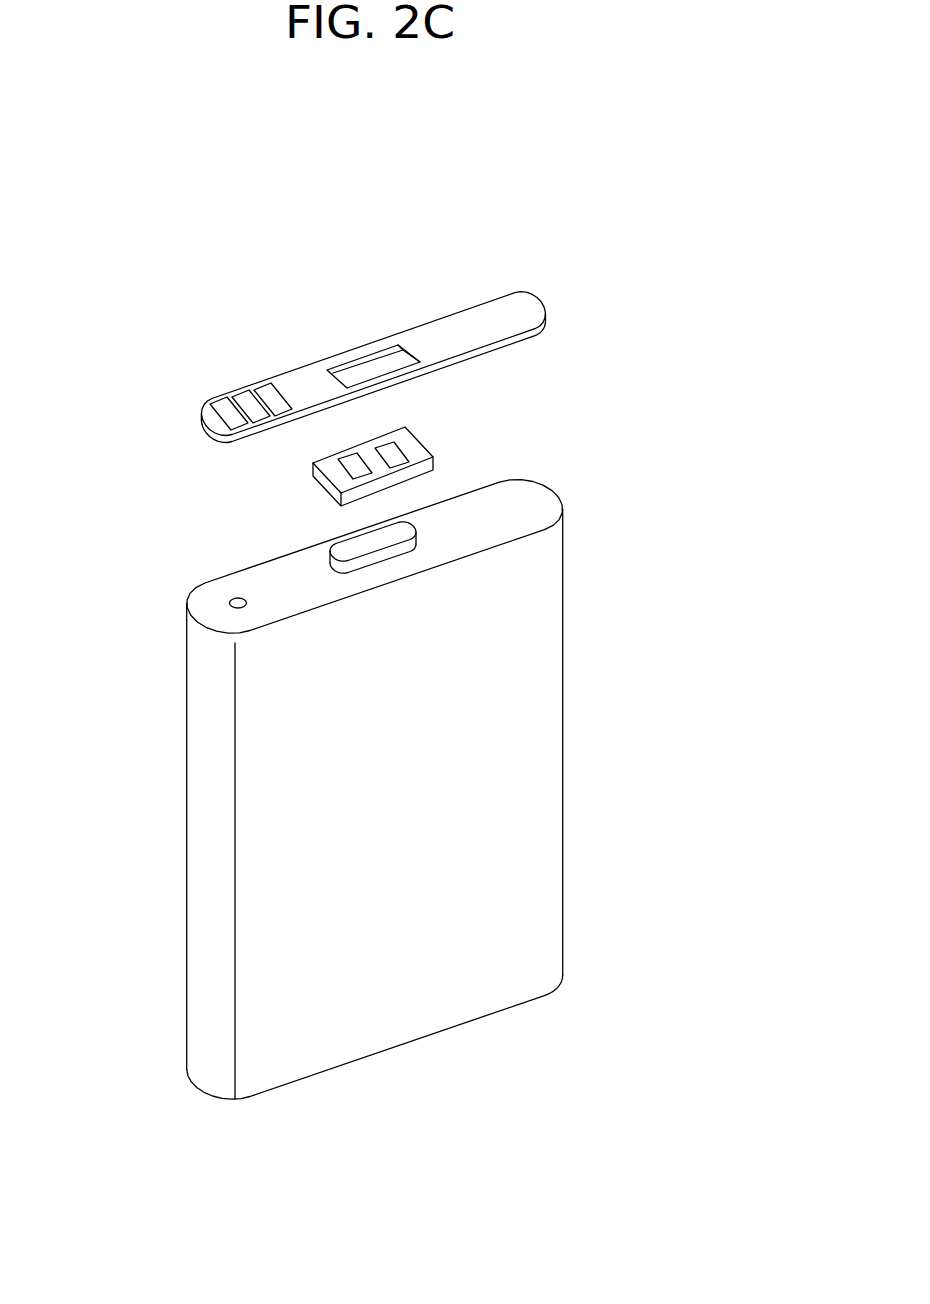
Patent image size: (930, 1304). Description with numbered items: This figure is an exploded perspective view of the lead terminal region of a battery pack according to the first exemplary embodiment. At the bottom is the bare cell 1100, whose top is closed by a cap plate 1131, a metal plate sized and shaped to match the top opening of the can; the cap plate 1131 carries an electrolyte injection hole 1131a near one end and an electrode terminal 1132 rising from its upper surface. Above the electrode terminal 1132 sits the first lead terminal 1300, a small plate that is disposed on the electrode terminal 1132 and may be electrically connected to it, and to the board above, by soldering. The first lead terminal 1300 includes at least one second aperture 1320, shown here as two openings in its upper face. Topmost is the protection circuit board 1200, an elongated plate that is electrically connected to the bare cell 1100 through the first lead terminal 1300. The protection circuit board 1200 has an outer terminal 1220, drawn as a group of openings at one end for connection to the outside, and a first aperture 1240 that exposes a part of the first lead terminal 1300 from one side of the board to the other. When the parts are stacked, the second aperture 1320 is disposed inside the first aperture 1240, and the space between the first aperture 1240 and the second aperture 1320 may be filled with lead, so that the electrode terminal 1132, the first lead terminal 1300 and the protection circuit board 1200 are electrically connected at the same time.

The bare cell 1100 is at (371, 777).
The cap plate 1131 is at (523, 500).
The electrolyte injection hole 1131a is at (232, 598).
The electrode terminal 1132 is at (342, 548).
The protection circuit board 1200 is at (300, 346).
The outer terminal 1220 is at (272, 395).
The first aperture 1240 is at (362, 360).
The first lead terminal 1300 is at (438, 447).
The second aperture 1320 is at (402, 435).